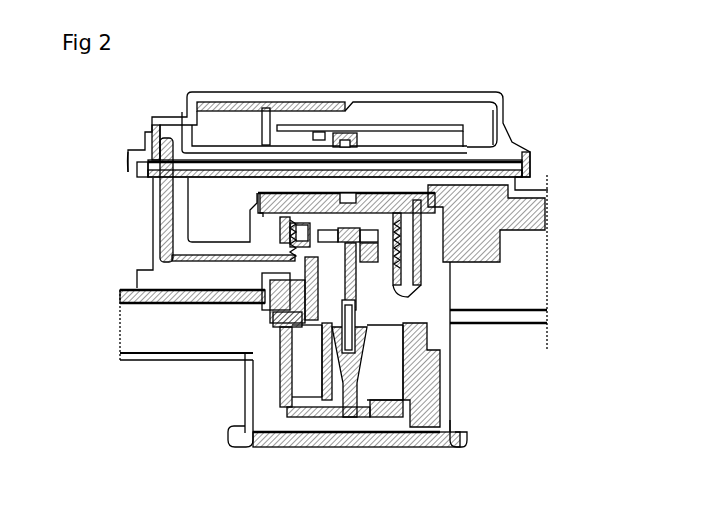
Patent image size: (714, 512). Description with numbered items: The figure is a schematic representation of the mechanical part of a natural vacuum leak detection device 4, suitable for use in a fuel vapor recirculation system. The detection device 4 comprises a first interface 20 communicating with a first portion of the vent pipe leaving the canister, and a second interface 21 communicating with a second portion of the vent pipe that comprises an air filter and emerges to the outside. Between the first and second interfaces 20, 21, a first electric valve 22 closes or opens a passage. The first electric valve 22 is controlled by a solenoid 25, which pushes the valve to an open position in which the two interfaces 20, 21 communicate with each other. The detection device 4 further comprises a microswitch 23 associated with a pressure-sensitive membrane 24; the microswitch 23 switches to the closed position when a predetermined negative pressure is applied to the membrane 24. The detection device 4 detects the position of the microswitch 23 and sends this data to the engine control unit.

The natural vacuum leak detection device 4 is at (203, 367).
The first interface 20 is at (130, 324).
The second interface 21 is at (473, 240).
The first electric valve 22 is at (343, 222).
The microswitch 23 is at (343, 152).
The pressure-sensitive membrane 24 is at (480, 167).
The solenoid 25 is at (388, 374).